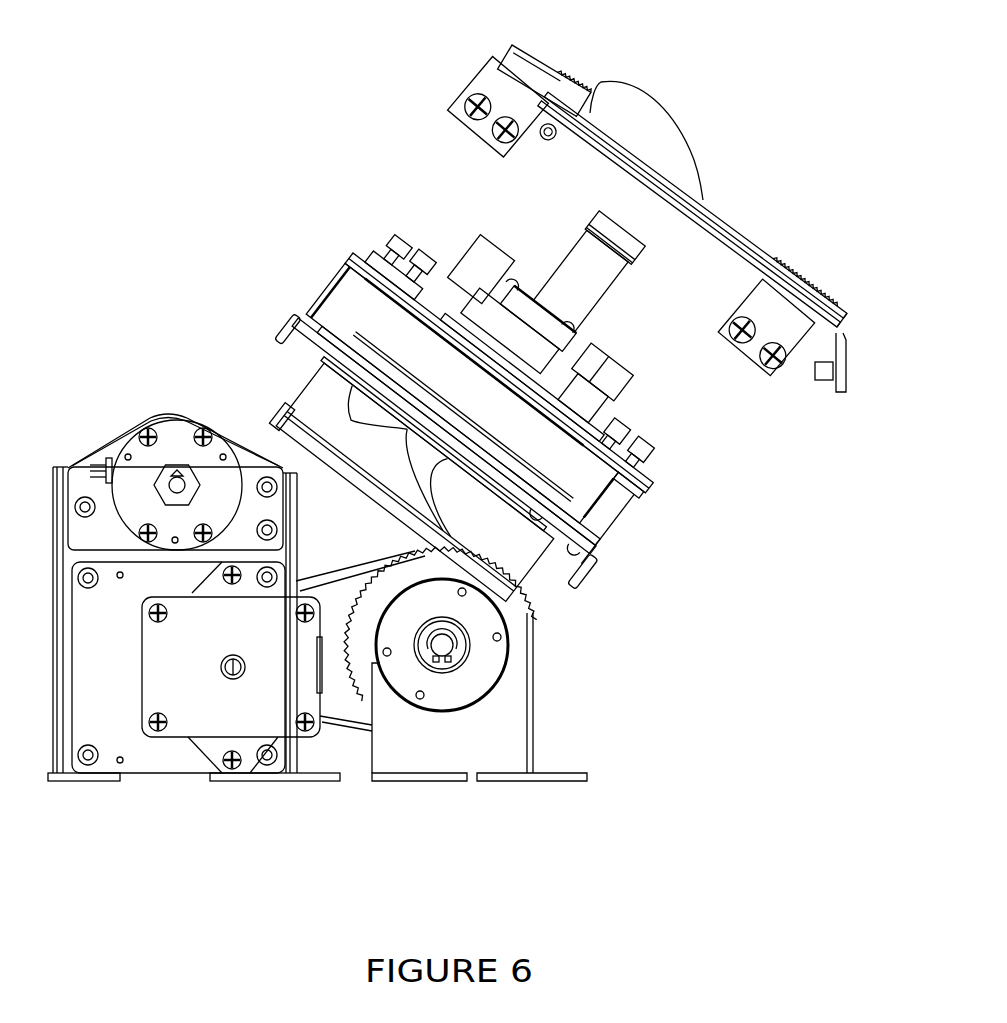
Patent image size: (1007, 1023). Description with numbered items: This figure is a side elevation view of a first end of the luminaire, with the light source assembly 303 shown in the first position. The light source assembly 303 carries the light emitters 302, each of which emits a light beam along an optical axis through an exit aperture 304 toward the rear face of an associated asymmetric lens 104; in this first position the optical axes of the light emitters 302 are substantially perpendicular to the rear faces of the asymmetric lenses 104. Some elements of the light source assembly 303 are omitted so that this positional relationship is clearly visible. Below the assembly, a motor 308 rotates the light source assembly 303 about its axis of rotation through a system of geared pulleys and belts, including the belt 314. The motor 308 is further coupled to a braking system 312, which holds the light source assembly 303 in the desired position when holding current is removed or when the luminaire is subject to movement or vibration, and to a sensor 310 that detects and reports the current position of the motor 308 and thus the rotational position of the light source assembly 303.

The asymmetric lens 104 is at (678, 132).
The light emitter 302 is at (572, 308).
The light source assembly 303 is at (345, 290).
The exit aperture 304 is at (602, 215).
The motor 308 is at (153, 750).
The sensor 310 is at (258, 710).
The braking system 312 is at (188, 447).
The belt 314 is at (345, 720).